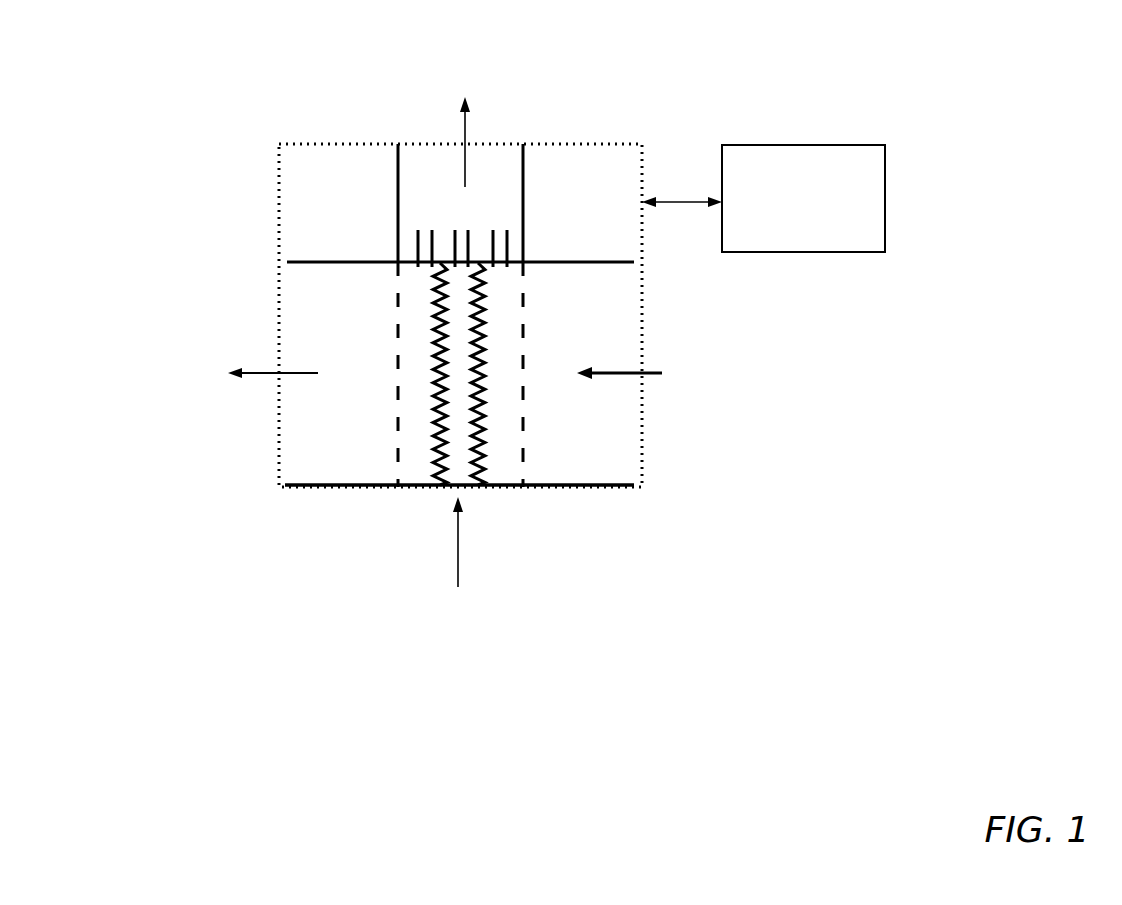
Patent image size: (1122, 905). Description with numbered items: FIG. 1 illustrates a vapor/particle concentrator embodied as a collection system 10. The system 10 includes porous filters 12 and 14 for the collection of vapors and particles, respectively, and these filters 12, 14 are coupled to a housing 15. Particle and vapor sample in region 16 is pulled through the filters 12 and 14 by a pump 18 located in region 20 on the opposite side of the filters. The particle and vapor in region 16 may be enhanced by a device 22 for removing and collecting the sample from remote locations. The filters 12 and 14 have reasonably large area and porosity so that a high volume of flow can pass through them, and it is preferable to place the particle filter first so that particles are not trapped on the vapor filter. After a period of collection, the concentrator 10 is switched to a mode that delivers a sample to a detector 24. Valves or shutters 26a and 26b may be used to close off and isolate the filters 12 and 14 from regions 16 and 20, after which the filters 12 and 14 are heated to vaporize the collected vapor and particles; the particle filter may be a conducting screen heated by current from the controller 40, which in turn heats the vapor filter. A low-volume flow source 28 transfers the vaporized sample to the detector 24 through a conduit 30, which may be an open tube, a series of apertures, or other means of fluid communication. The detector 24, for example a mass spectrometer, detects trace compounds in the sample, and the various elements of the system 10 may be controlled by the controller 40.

The collection system 10 is at (404, 689).
The porous filter 12 is at (440, 425).
The porous filter 14 is at (483, 427).
The housing 15 is at (587, 487).
The region 16 is at (583, 435).
The pump 18 is at (233, 372).
The region 20 is at (338, 435).
The device 22 is at (662, 370).
The detector 24 is at (465, 105).
The valve or shutter 26a is at (393, 303).
The valve or shutter 26b is at (527, 306).
The low-volume flow source 28 is at (458, 582).
The conduit 30 is at (500, 222).
The controller 40 is at (763, 198).